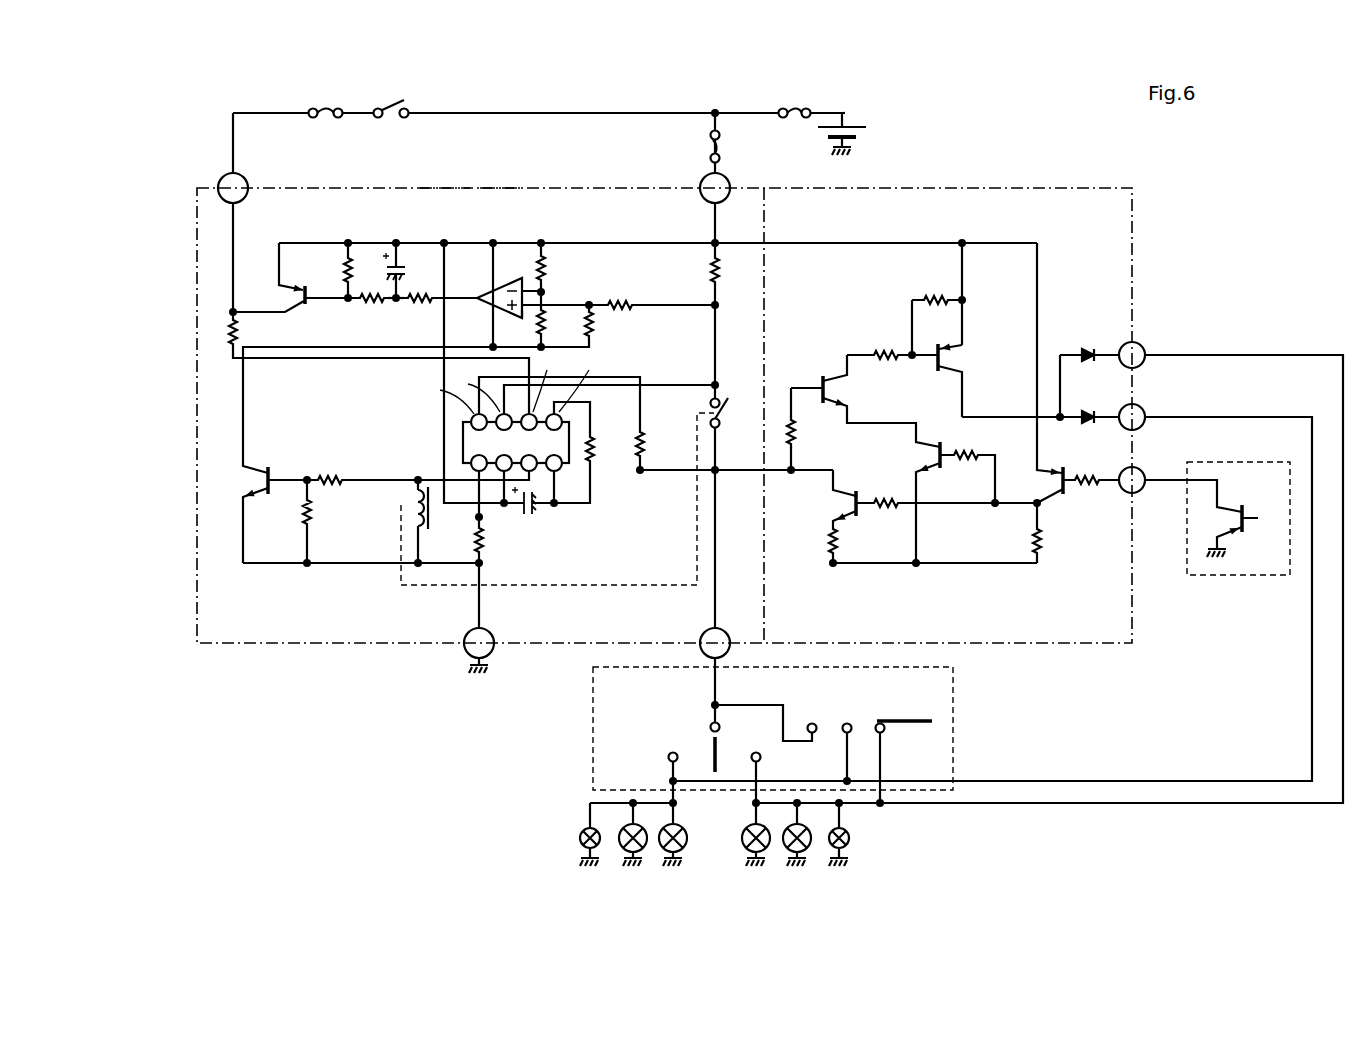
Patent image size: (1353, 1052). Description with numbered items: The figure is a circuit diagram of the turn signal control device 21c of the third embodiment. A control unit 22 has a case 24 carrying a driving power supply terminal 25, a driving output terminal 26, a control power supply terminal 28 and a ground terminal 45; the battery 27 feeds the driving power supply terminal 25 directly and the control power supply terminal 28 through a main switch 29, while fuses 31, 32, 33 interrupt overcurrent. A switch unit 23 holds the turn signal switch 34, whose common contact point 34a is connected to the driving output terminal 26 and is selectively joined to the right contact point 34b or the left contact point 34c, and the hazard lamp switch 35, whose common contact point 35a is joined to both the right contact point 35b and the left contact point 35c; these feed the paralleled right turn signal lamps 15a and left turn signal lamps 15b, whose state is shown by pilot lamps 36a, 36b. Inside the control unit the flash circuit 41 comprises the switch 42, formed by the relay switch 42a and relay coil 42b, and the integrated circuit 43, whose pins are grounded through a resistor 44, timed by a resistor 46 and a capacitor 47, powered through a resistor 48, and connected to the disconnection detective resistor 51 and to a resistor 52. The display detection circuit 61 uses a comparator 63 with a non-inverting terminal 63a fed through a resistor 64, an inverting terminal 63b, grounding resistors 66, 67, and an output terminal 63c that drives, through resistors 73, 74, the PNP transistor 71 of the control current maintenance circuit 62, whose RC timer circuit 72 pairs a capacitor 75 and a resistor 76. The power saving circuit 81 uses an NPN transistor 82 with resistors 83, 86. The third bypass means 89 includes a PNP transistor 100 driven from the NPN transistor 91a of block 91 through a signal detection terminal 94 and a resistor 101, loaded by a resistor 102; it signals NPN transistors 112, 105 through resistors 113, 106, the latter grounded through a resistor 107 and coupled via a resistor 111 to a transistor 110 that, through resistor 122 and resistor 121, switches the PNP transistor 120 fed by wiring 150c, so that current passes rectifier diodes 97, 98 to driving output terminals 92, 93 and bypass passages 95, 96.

The right turn signal lamps 15a is at (770, 836).
The left turn signal lamps 15b is at (648, 838).
The turn signal control device 21c is at (948, 112).
The control unit 22 is at (499, 186).
The switch unit 23 is at (590, 747).
The case 24 is at (445, 186).
The driving power supply terminal 25 is at (726, 178).
The driving output terminal 26 is at (708, 622).
The battery 27 is at (874, 142).
The control power supply terminal 28 is at (246, 184).
The main switch 29 is at (383, 102).
The fuse 31 is at (785, 108).
The fuse 32 is at (708, 146).
The fuse 33 is at (315, 108).
The turn signal switch 34 is at (698, 738).
The common contact point 34a is at (720, 726).
The right contact point 34b is at (762, 758).
The left contact point 34c is at (667, 759).
The hazard lamp switch 35 is at (888, 716).
The common contact point 35a is at (813, 724).
The right contact point 35b is at (886, 734).
The left contact point 35c is at (847, 724).
The pilot lamp 36a is at (851, 838).
The pilot lamp 36b is at (579, 838).
The flash circuit 41 is at (571, 588).
The switch 42 is at (726, 398).
The relay switch 42a is at (720, 434).
The relay coil 42b is at (412, 520).
The integrated circuit 43 is at (460, 444).
The resistor 44 is at (472, 546).
The ground terminal 45 is at (468, 622).
The resistor 46 is at (588, 464).
The capacitor 47 is at (530, 514).
The resistor 48 is at (237, 336).
The disconnection detective resistor 51 is at (710, 280).
The resistor 52 is at (650, 446).
The display detection circuit 61 is at (541, 239).
The control current maintenance circuit 62 is at (348, 239).
The comparator 63 is at (484, 296).
The non-inverting terminal 63a is at (524, 312).
The inverting terminal 63b is at (540, 289).
The output terminal 63c is at (492, 308).
The resistor 64 is at (623, 304).
The resistor 66 is at (593, 325).
The resistor 67 is at (544, 324).
The PNP transistor 71 is at (311, 308).
The RC timer circuit 72 is at (396, 239).
The resistor 73 is at (372, 304).
The resistor 74 is at (421, 304).
The capacitor 75 is at (402, 266).
The resistor 76 is at (346, 270).
The power saving circuit 81 is at (317, 466).
The NPN transistor 82 is at (277, 466).
The resistor 83 is at (333, 474).
The resistor 86 is at (314, 510).
The third bypass means 89 is at (1012, 186).
The external switching circuit 91 is at (1226, 578).
The NPN transistor 91a is at (1238, 506).
The driving output terminal 92 is at (1138, 343).
The driving output terminal 93 is at (1139, 404).
The signal detection terminal 94 is at (1139, 467).
The bypass passage 95 is at (1226, 352).
The bypass passage 96 is at (1227, 413).
The rectifier diode 97 is at (1090, 344).
The rectifier diode 98 is at (1090, 406).
The PNP transistor 100 is at (1054, 464).
The resistor 101 is at (1088, 491).
The resistor 102 is at (1052, 546).
The NPN transistor 105 is at (850, 488).
The resistor 106 is at (884, 512).
The resistor 107 is at (830, 544).
The transistor 110 is at (824, 376).
The resistor 111 is at (794, 430).
The NPN transistor 112 is at (941, 446).
The resistor 113 is at (968, 460).
The PNP transistor 120 is at (946, 376).
The resistor 121 is at (930, 300).
The resistor 122 is at (877, 360).
The wiring 150c is at (862, 242).